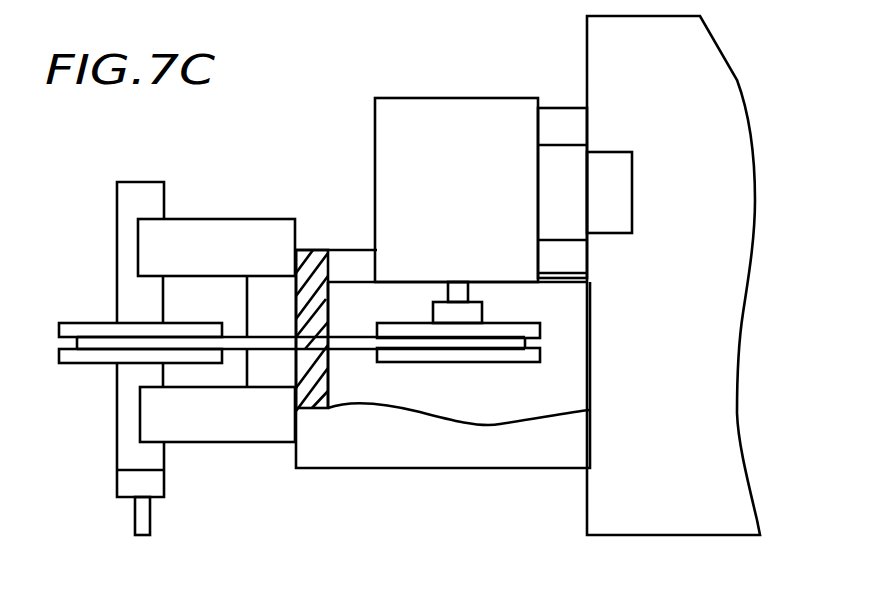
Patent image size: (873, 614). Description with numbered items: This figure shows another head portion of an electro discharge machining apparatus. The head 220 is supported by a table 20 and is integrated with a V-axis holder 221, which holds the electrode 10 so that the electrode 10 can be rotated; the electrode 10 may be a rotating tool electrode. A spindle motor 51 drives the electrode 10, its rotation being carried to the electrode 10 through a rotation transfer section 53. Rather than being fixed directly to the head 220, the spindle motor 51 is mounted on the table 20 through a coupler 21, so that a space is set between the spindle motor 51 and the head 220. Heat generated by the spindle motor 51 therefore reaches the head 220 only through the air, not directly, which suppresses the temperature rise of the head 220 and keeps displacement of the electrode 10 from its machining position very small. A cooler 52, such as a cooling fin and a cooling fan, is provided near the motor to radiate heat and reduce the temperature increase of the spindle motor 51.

The electrode 10 is at (118, 457).
The table 20 is at (658, 535).
The coupler 21 is at (560, 107).
The spindle motor 51 is at (373, 142).
The cooler 52 is at (612, 152).
The rotation transfer section 53 is at (338, 343).
The head 220 is at (475, 468).
The V-axis holder 221 is at (202, 443).